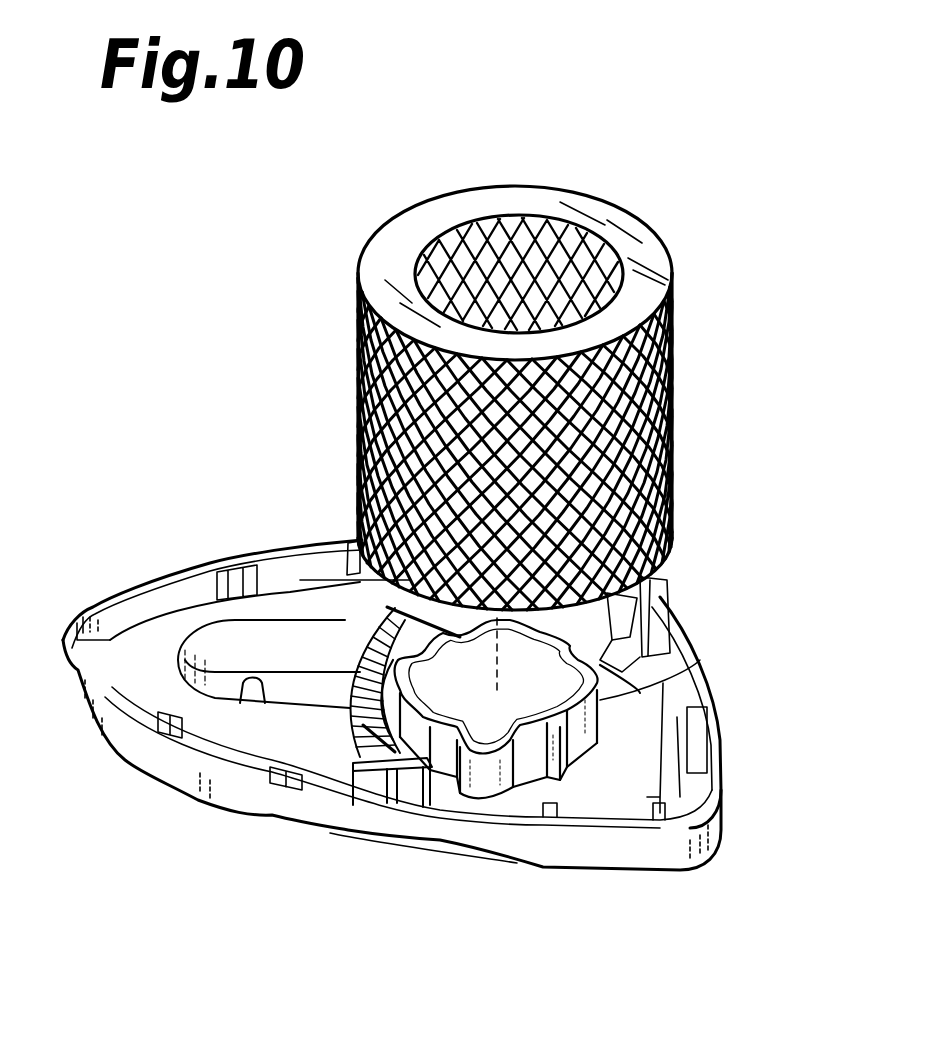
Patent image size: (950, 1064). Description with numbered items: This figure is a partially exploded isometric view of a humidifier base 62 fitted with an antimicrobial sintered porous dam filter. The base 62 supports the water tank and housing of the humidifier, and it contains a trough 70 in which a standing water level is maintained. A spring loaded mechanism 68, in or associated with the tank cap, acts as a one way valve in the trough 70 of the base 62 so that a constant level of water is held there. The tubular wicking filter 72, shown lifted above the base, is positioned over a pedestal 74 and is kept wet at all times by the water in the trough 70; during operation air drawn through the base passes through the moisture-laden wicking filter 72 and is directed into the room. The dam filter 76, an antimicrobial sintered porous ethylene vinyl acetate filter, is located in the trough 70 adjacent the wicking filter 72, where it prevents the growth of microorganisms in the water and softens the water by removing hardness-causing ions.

The base 62 is at (690, 830).
The spring loaded mechanism 68 is at (352, 688).
The trough 70 is at (280, 643).
The wicking filter 72 is at (677, 372).
The pedestal 74 is at (588, 712).
The dam filter 76 is at (345, 745).